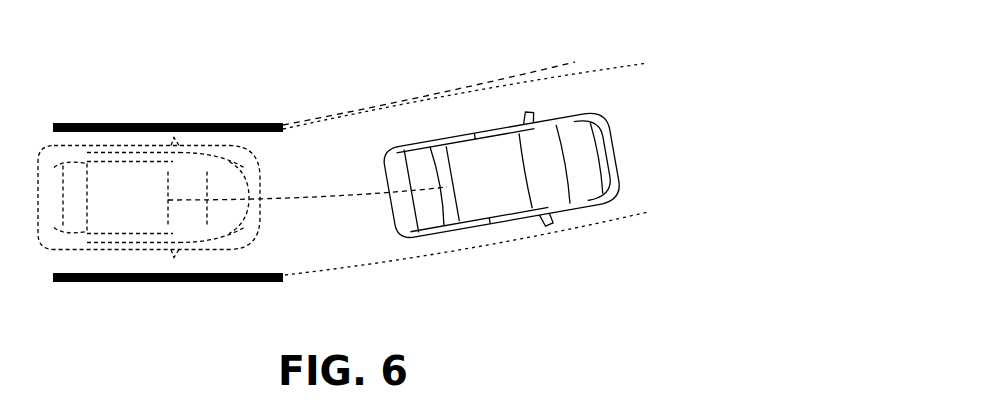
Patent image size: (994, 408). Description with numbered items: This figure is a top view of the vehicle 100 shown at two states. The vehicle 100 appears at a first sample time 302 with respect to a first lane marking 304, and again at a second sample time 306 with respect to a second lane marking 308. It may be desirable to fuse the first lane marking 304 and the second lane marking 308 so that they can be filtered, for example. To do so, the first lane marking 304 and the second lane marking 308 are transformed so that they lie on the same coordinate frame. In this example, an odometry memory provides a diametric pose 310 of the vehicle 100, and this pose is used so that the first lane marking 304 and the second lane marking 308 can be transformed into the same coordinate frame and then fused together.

The vehicle 100 is at (624, 128).
The first sample time 302 is at (180, 265).
The first lane marking 304 is at (509, 73).
The second sample time 306 is at (523, 237).
The second lane marking 308 is at (618, 63).
The diametric pose 310 is at (266, 225).